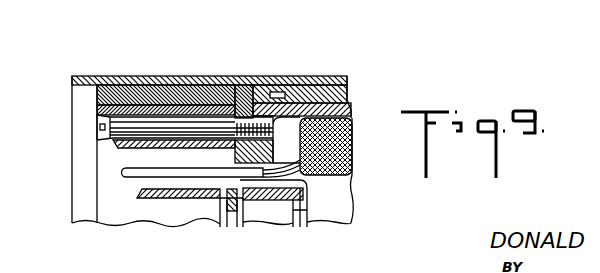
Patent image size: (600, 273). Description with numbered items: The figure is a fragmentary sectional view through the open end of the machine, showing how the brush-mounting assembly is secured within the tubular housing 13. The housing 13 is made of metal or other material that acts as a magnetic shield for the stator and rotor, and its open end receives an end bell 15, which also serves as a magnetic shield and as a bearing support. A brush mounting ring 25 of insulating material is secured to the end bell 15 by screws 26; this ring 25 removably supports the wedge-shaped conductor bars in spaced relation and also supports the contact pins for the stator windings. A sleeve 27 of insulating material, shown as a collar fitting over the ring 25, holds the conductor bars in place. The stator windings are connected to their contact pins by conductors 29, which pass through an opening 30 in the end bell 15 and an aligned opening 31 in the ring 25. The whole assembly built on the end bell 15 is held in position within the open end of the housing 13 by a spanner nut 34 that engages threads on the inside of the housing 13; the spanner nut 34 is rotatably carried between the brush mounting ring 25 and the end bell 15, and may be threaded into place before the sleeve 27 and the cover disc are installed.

The housing 13 is at (312, 84).
The end bell 15 is at (347, 103).
The brush mounting ring 25 is at (162, 95).
The screws 26 is at (97, 135).
The sleeve 27 is at (98, 97).
The conductors 29 is at (120, 173).
The opening 30 is at (247, 190).
The opening 31 is at (140, 184).
The spanner nut 34 is at (244, 93).